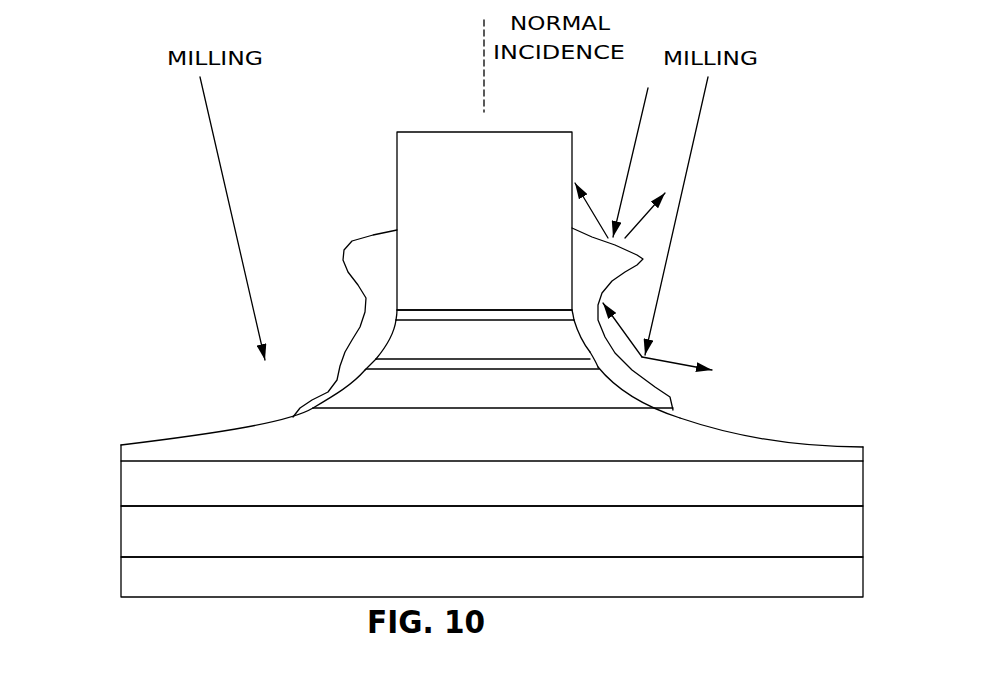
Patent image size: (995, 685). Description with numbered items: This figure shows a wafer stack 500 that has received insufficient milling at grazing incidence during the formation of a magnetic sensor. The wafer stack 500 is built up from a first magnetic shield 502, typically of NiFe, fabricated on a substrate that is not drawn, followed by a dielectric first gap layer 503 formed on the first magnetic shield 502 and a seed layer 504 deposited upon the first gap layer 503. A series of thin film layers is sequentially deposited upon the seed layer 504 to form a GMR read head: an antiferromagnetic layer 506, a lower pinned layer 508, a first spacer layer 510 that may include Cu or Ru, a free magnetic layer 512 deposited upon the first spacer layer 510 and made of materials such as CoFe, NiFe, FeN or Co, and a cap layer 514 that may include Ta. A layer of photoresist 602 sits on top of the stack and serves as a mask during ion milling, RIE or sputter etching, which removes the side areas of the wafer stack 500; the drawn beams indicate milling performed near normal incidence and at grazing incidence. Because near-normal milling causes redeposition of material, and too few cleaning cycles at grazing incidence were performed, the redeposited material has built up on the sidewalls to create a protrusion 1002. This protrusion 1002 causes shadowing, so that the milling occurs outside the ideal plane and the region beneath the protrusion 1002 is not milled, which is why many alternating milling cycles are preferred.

The wafer stack 500 is at (147, 260).
The first magnetic shield 502 is at (121, 577).
The first gap layer 503 is at (121, 527).
The seed layer 504 is at (121, 485).
The antiferromagnetic layer 506 is at (218, 436).
The lower pinned layer 508 is at (330, 396).
The first spacer layer 510 is at (375, 366).
The free magnetic layer 512 is at (392, 336).
The cap layer 514 is at (397, 312).
The photoresist 602 is at (397, 221).
The protrusion 1002 is at (643, 259).